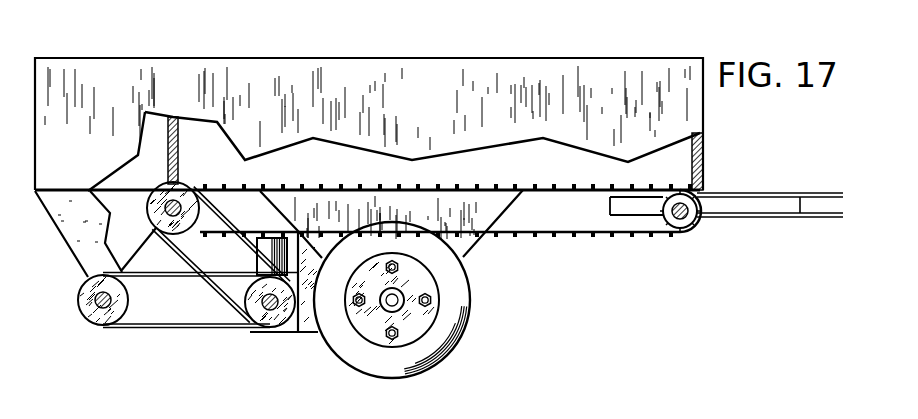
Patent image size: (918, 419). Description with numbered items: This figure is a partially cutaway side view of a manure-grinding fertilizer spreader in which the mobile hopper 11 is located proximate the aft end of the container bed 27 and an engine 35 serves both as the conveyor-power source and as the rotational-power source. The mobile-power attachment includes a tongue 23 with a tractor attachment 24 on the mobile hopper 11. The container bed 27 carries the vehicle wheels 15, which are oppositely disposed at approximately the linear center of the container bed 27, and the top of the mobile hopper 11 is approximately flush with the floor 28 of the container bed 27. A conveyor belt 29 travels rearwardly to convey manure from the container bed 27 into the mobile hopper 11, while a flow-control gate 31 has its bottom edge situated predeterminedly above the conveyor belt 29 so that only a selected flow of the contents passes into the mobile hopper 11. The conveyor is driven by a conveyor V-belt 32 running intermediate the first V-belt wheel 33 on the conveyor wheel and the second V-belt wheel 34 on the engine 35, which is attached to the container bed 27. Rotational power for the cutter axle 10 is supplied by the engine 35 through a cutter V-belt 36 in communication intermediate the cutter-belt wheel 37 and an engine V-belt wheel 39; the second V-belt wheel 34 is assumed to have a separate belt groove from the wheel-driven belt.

The cutter axle 10 is at (88, 313).
The mobile hopper 11 is at (62, 268).
The vehicle wheels 15 is at (467, 318).
The tongue 23 is at (752, 190).
The tractor attachment 24 is at (823, 190).
The container bed 27 is at (703, 58).
The floor 28 is at (566, 196).
The conveyor belt 29 is at (322, 188).
The flow-control gate 31 is at (178, 160).
The conveyor V-belt 32 is at (232, 237).
The first V-belt wheel 33 is at (157, 193).
The second V-belt wheel 34 is at (276, 310).
The engine 35 is at (320, 335).
The cutter V-belt 36 is at (144, 279).
The cutter-belt wheel 37 is at (99, 312).
The engine V-belt wheel 39 is at (253, 331).